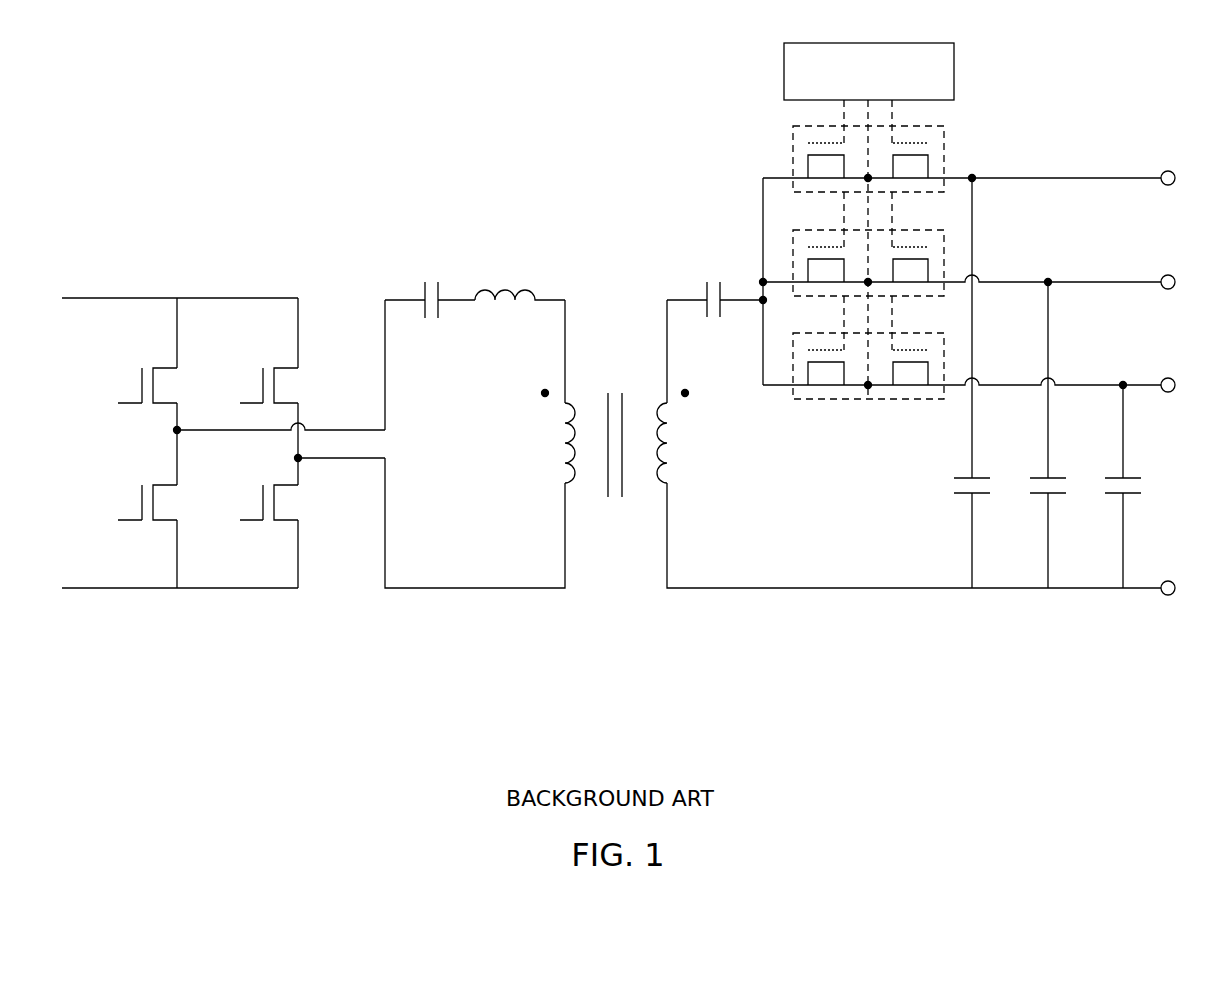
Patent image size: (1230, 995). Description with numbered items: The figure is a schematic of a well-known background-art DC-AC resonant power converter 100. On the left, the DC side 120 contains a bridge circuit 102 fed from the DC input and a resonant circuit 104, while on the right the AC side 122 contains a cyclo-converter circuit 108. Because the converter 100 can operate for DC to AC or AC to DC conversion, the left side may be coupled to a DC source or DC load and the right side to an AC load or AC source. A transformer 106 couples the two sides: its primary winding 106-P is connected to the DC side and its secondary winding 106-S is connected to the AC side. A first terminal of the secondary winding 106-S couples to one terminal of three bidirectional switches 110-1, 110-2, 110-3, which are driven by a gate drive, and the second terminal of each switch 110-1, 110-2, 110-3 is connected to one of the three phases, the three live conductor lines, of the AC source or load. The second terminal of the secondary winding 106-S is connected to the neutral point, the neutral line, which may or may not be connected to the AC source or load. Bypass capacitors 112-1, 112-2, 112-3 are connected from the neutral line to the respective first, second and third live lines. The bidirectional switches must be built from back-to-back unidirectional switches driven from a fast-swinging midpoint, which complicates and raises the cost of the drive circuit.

The DC-AC resonant power converter 100 is at (1141, 83).
The bridge circuit 102 is at (176, 613).
The resonant circuit 104 is at (405, 260).
The transformer 106 is at (614, 543).
The primary winding 106-P is at (557, 455).
The secondary winding 106-S is at (673, 455).
The cyclo-converter circuit 108 is at (946, 369).
The bidirectional switch 110-1 is at (945, 141).
The bidirectional switch 110-2 is at (945, 243).
The bidirectional switch 110-3 is at (792, 347).
The bypass capacitor 112-1 is at (972, 532).
The bypass capacitor 112-2 is at (1048, 512).
The bypass capacitor 112-3 is at (1165, 486).
The DC side 120 is at (59, 715).
The AC side 122 is at (667, 715).